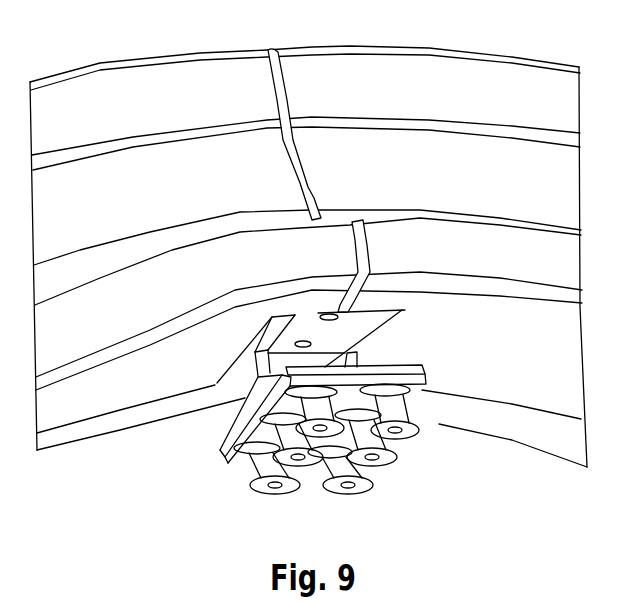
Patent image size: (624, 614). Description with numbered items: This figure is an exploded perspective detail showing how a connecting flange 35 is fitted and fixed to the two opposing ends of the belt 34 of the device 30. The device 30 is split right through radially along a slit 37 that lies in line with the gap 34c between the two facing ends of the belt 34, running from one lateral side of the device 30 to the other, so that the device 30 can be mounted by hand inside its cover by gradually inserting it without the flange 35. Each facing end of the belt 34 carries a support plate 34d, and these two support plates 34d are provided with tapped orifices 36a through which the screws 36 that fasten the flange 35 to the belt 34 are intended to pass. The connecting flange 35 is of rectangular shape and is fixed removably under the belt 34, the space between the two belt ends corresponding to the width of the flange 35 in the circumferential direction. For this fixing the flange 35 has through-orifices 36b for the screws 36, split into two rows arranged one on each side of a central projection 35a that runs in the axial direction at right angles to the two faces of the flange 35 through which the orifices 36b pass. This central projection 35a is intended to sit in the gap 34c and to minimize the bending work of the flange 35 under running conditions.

The device 30 is at (511, 447).
The belt 34 is at (354, 266).
The gap 34c is at (238, 409).
The support plate 34d is at (315, 338).
The connecting flange 35 is at (219, 456).
The central projection 35a is at (357, 366).
The screw 36 is at (272, 494).
The tapped orifice 36a is at (340, 318).
The through-orifice 36b is at (398, 386).
The slit 37 is at (273, 68).